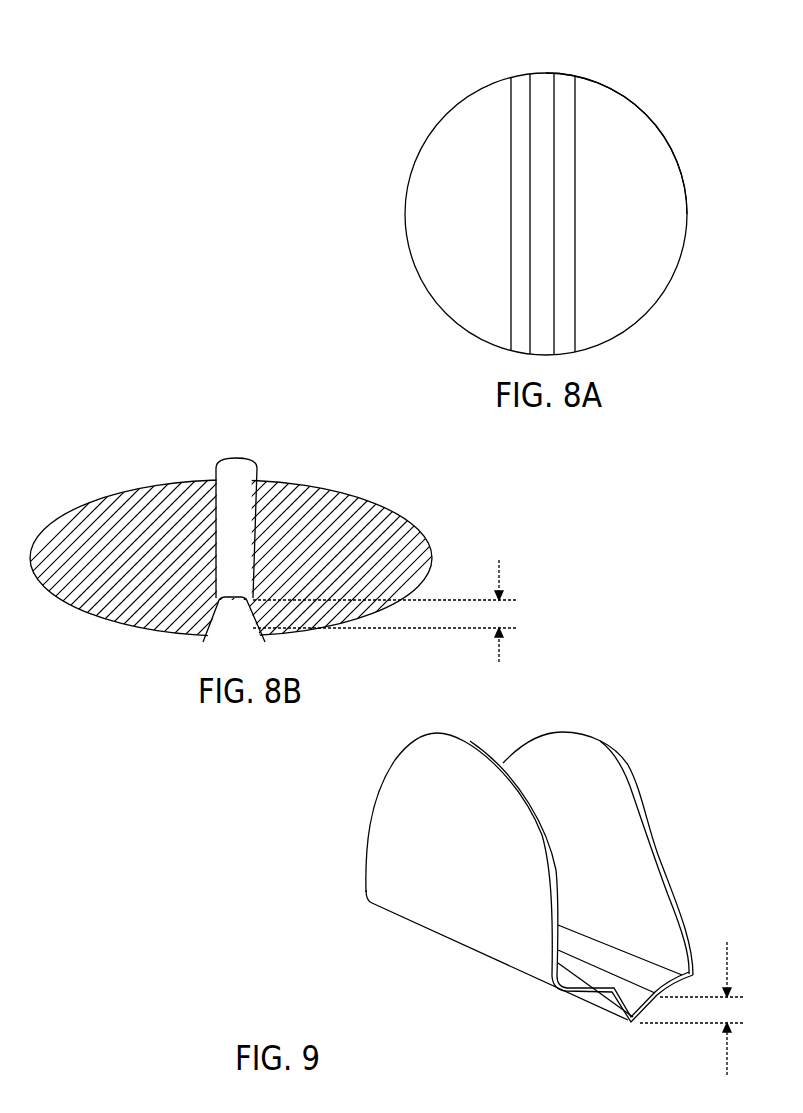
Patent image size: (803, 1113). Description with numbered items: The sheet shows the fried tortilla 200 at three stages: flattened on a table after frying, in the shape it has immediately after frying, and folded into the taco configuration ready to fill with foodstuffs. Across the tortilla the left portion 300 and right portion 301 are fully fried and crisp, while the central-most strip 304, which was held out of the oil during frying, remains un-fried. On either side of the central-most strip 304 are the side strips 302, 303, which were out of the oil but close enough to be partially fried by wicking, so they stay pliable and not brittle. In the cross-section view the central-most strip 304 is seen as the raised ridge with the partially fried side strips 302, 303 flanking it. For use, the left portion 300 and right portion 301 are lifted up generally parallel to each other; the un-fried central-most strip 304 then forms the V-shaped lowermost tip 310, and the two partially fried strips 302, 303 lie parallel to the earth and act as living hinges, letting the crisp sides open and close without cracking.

In FIG. 8B, the tortilla 200 is at (436, 532).
In FIG. 9, the tortilla 200 is at (514, 875).
In FIG. 8A, the left portion 300 is at (450, 260).
In FIG. 9, the left portion 300 is at (427, 843).
In FIG. 8A, the right portion 301 is at (625, 260).
In FIG. 9, the right portion 301 is at (652, 830).
In FIG. 8A, the side strip 302 is at (568, 85).
In FIG. 9, the side strip 302 is at (693, 989).
In FIG. 8A, the side strip 303 is at (518, 85).
In FIG. 9, the side strip 303 is at (590, 993).
In FIG. 8A, the central-most strip 304 is at (540, 85).
In FIG. 8B, the central-most strip 304 is at (232, 473).
In FIG. 9, the V-shaped lowermost tip 310 is at (632, 1024).